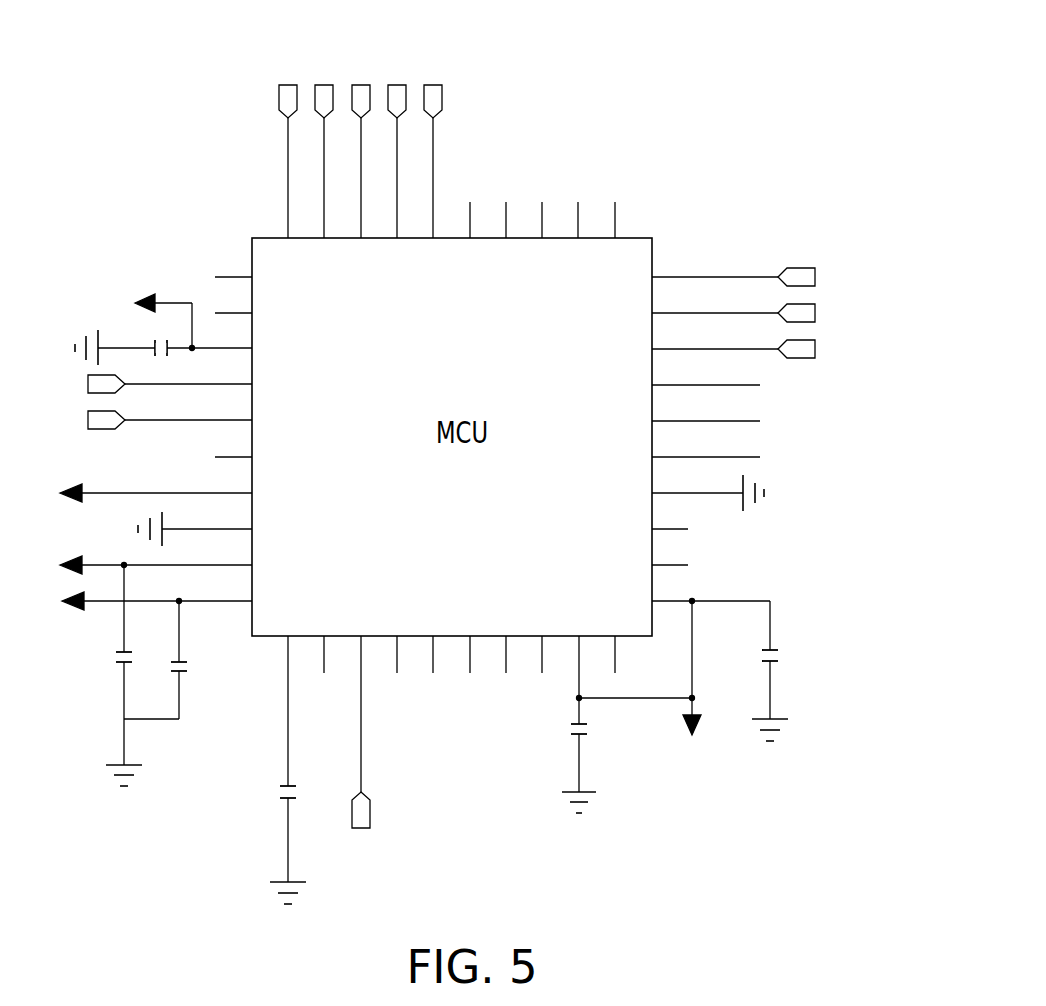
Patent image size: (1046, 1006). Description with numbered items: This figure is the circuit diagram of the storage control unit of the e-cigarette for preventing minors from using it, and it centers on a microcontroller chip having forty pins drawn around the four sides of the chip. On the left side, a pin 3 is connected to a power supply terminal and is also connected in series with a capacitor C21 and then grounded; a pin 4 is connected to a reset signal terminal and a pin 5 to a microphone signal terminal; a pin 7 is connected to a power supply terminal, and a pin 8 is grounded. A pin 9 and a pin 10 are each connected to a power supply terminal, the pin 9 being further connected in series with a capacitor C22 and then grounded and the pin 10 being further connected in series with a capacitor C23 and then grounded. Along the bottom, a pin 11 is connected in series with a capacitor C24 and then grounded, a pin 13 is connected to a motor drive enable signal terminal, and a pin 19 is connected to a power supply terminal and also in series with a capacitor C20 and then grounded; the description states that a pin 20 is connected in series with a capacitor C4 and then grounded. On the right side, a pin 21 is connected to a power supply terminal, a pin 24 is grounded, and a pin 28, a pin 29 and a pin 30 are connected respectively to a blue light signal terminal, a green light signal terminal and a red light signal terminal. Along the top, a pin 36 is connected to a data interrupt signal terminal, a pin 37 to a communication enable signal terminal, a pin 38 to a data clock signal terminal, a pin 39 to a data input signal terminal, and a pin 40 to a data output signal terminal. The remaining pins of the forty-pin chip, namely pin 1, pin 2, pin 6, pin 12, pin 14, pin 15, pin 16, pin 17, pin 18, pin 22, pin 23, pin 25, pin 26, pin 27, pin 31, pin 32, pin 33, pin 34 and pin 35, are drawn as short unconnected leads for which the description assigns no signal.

The MCU pin 1 is at (233, 268).
The MCU pin 2 is at (233, 304).
The pin 3 is at (163, 333).
The pin 4 is at (147, 380).
The pin 5 is at (147, 416).
The MCU pin 6 is at (233, 448).
The pin 7 is at (138, 489).
The pin 8 is at (195, 529).
The pin 9 is at (138, 561).
The pin 10 is at (138, 597).
The pin 11 is at (280, 711).
The MCU pin 12 is at (316, 654).
The pin 13 is at (362, 753).
The MCU pin 14 is at (389, 654).
The MCU pin 15 is at (425, 654).
The MCU pin 16 is at (462, 654).
The MCU pin 17 is at (498, 654).
The MCU pin 18 is at (534, 654).
The pin 19 is at (635, 698).
The pin 20 is at (607, 654).
The pin 21 is at (711, 641).
The MCU pin 22 is at (670, 556).
The MCU pin 23 is at (670, 520).
The pin 24 is at (708, 493).
The MCU pin 25 is at (706, 448).
The MCU pin 26 is at (706, 412).
The MCU pin 27 is at (706, 376).
The pin 28 is at (774, 345).
The pin 29 is at (780, 309).
The pin 30 is at (771, 273).
The MCU pin 31 is at (606, 220).
The MCU pin 32 is at (569, 220).
The MCU pin 33 is at (533, 220).
The MCU pin 34 is at (497, 220).
The MCU pin 35 is at (461, 220).
The pin 36 is at (428, 143).
The pin 37 is at (392, 131).
The pin 38 is at (356, 127).
The pin 39 is at (319, 122).
The pin 40 is at (283, 122).
The capacitor C4 is at (757, 695).
The capacitor C20 is at (564, 755).
The capacitor C21 is at (164, 356).
The capacitor C22 is at (110, 675).
The capacitor C23 is at (172, 660).
The capacitor C24 is at (300, 840).